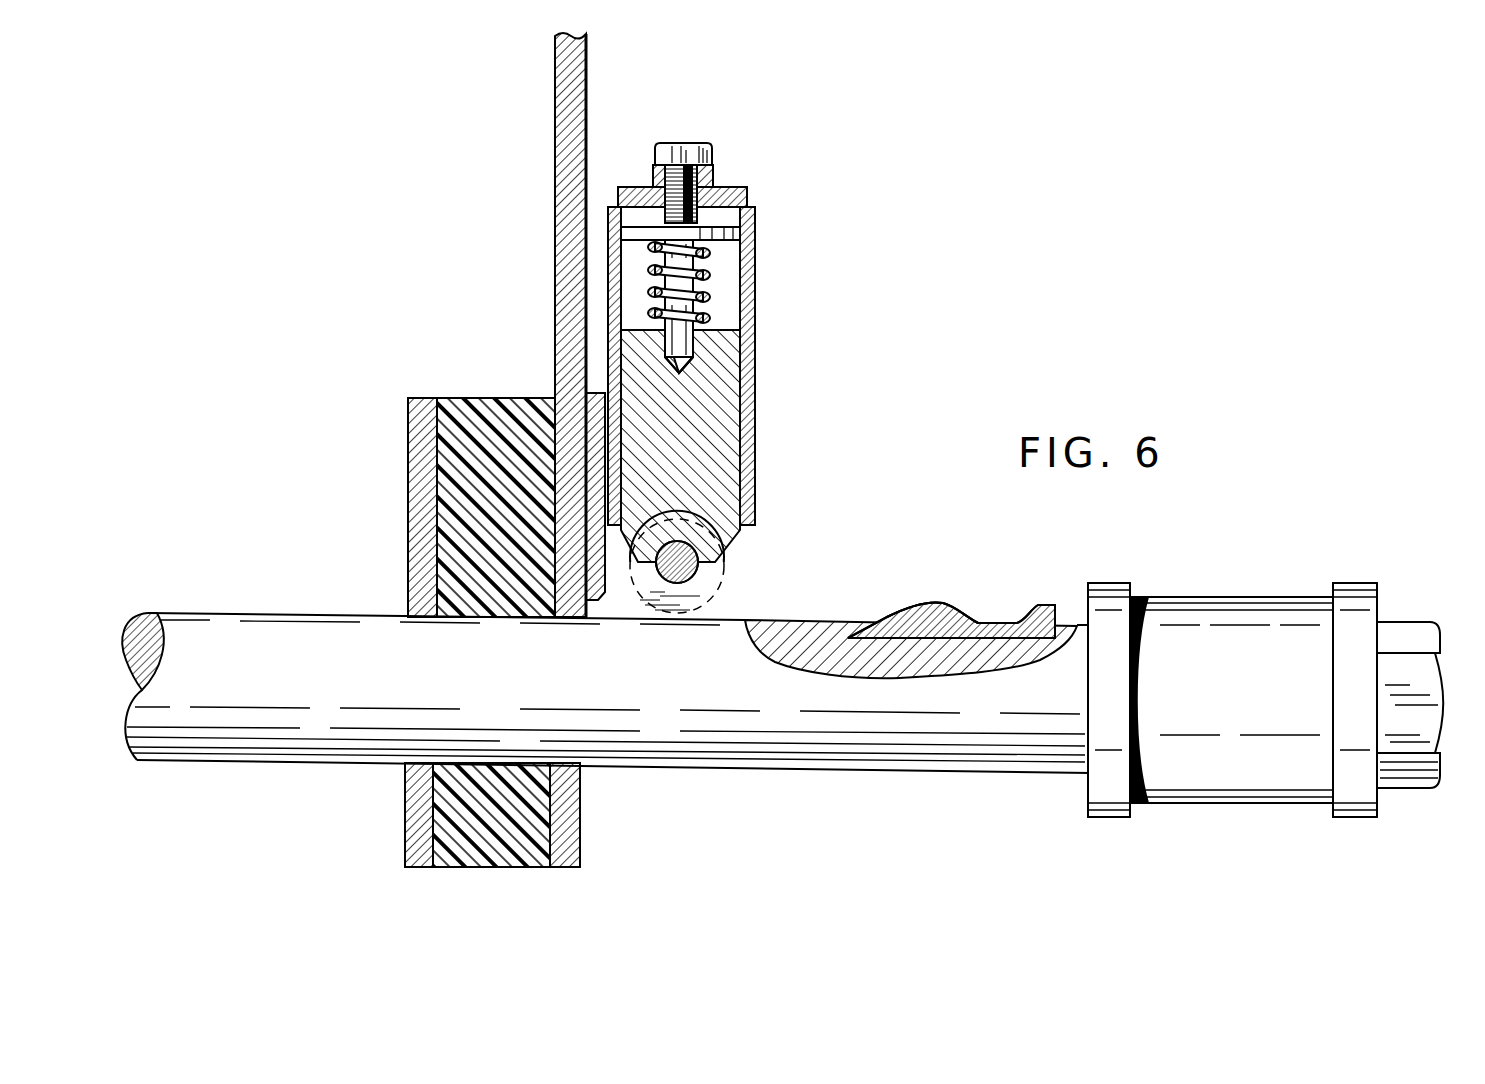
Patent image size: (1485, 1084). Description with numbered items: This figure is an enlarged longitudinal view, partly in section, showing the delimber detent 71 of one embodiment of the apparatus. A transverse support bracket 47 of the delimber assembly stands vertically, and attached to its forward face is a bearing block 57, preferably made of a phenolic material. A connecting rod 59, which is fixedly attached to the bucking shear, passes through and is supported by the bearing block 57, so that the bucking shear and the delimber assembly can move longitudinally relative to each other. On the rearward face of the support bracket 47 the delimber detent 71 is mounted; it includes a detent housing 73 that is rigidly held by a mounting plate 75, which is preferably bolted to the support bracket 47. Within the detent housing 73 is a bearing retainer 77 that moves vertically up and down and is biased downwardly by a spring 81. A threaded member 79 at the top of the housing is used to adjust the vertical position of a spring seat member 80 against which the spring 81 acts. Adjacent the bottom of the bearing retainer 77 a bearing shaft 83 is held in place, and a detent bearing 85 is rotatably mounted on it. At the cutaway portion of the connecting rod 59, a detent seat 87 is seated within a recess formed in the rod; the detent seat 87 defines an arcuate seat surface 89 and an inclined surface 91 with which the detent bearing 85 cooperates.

The support bracket 47 is at (566, 157).
The bearing block 57 is at (508, 397).
The connecting rod 59 is at (348, 616).
The delimber detent 71 is at (779, 211).
The detent housing 73 is at (609, 204).
The mounting plate 75 is at (597, 600).
The bearing retainer 77 is at (718, 470).
The threaded member 79 is at (688, 150).
The spring seat member 80 is at (704, 228).
The spring 81 is at (712, 258).
The bearing shaft 83 is at (702, 574).
The detent bearing 85 is at (726, 580).
The detent seat 87 is at (1050, 605).
The arcuate seat surface 89 is at (962, 622).
The inclined surface 91 is at (900, 614).